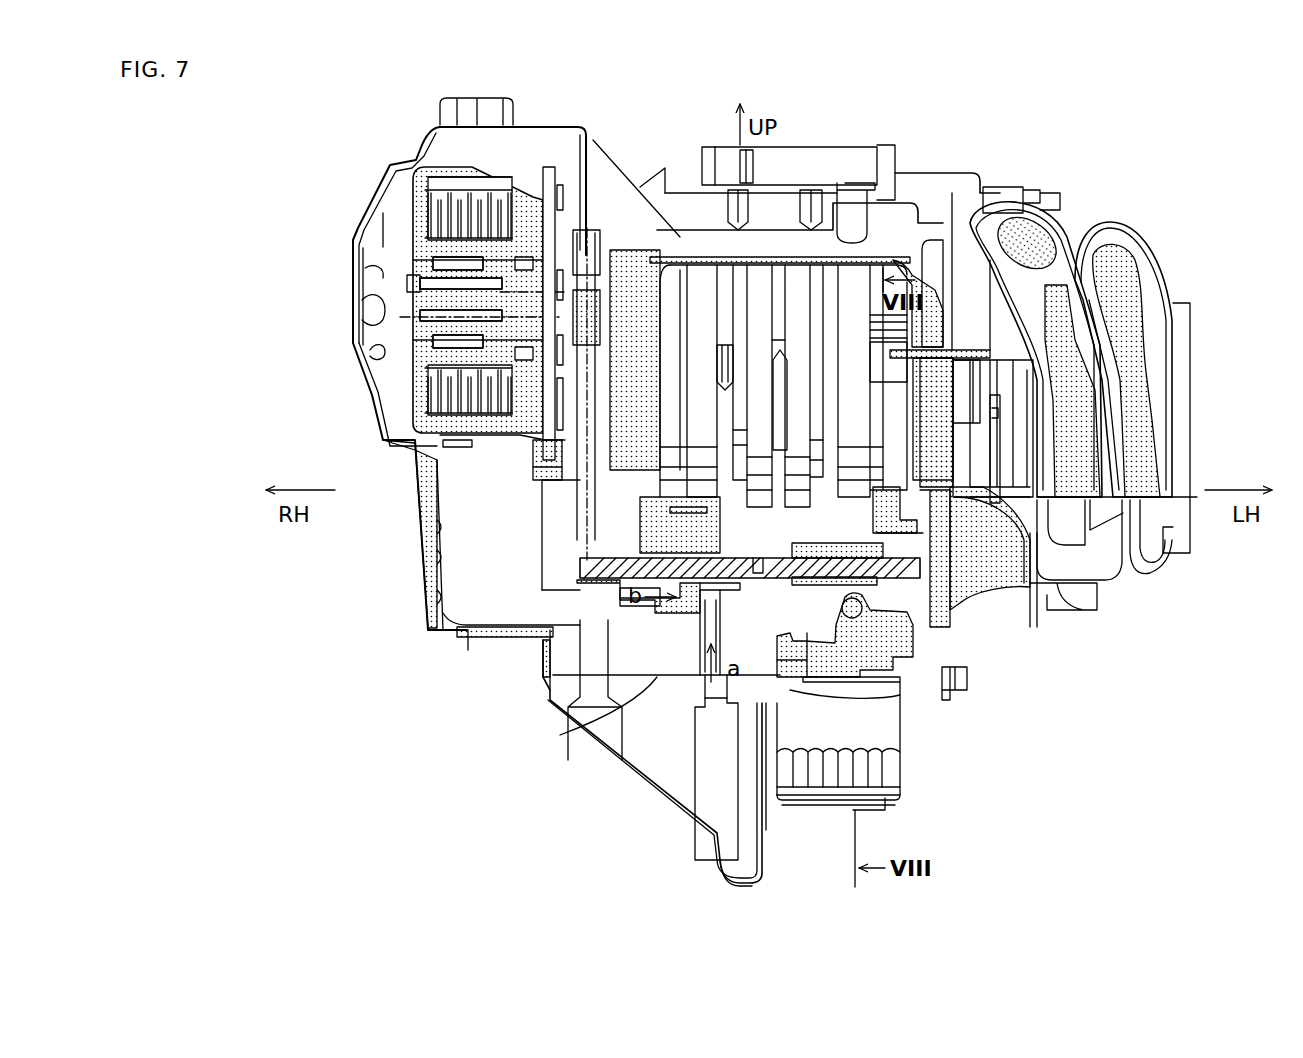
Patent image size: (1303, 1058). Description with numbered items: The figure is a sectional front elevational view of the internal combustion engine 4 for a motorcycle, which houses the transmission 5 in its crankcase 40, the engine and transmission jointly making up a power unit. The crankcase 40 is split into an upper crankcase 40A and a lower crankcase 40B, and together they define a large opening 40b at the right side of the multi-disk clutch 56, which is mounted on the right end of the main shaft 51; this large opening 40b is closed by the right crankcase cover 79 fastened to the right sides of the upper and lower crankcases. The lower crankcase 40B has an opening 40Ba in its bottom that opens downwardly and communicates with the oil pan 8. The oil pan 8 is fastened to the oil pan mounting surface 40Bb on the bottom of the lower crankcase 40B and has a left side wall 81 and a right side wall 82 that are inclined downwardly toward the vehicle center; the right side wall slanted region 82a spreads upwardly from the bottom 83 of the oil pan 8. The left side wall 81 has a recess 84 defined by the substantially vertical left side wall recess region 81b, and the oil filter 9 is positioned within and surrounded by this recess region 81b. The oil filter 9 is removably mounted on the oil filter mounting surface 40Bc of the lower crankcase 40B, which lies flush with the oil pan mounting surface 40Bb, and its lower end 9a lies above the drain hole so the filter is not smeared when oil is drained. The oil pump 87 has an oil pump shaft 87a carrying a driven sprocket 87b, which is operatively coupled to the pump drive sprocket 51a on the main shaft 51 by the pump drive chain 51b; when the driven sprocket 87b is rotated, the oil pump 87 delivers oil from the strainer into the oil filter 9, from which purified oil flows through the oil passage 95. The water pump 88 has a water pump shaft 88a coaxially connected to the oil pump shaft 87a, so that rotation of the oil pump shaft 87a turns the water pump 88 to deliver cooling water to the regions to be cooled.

The internal combustion engine 4 is at (1080, 163).
The transmission 5 is at (767, 345).
The oil pan 8 is at (650, 793).
The oil filter 9 is at (900, 740).
The lower end of the oil filter 9a is at (857, 818).
The crankcase 40 is at (732, 485).
The upper crankcase 40A is at (932, 290).
The lower crankcase 40B is at (1140, 613).
The large opening 40b is at (507, 504).
The opening 40Ba is at (688, 666).
The oil pan mounting surface 40Bb is at (588, 730).
The oil filter mounting surface 40Bc is at (875, 712).
The main shaft 51 is at (605, 200).
The pump drive sprocket 51a is at (587, 236).
The pump drive chain 51b is at (592, 502).
The multi-disk clutch 56 is at (400, 206).
The right crankcase cover 79 is at (356, 404).
The left side wall 81 is at (800, 789).
The left side wall recess region 81b is at (780, 797).
The right side wall 82 is at (612, 761).
The right side wall slanted region 82a is at (613, 747).
The bottom of the oil pan 83 is at (718, 881).
The recess 84 is at (838, 798).
The oil pump 87 is at (640, 625).
The oil pump shaft 87a is at (730, 572).
The driven sprocket 87b is at (585, 530).
The water pump 88 is at (987, 614).
The water pump shaft 88a is at (773, 557).
The oil passage 95 is at (842, 614).